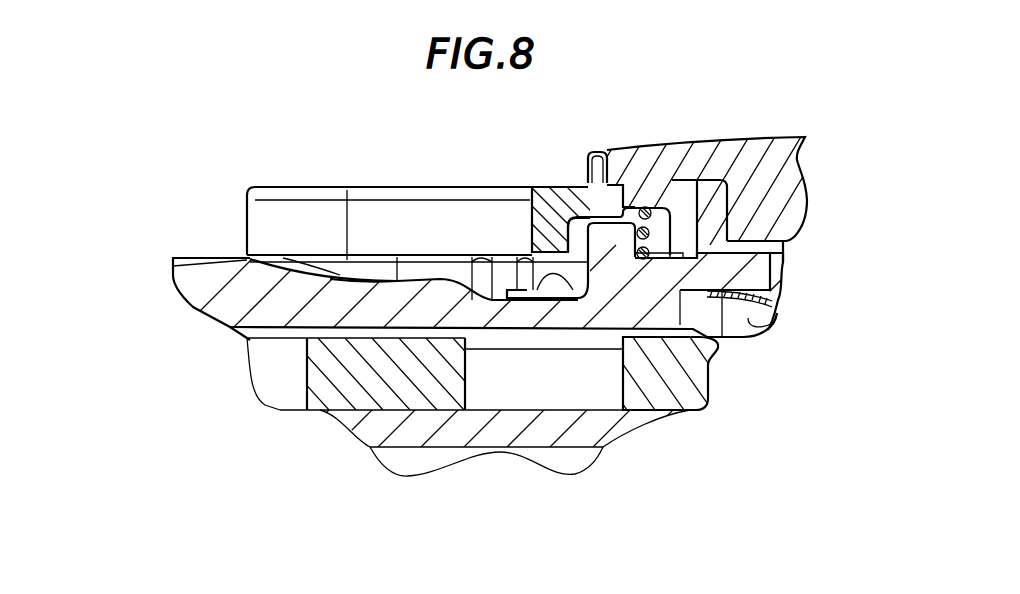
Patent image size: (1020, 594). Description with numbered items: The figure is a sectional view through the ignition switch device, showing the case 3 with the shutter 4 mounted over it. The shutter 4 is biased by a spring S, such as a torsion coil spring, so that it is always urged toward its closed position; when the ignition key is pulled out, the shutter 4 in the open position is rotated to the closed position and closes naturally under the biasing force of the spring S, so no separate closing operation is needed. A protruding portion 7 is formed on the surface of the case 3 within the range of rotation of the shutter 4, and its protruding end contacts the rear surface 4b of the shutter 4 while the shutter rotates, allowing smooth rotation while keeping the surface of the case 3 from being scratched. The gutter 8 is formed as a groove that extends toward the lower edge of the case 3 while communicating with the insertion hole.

The case 3 is at (192, 290).
The shutter 4 is at (452, 186).
The rear surface 4b is at (396, 282).
The protruding portion 7 is at (247, 259).
The gutter 8 is at (574, 292).
The spring S is at (660, 231).